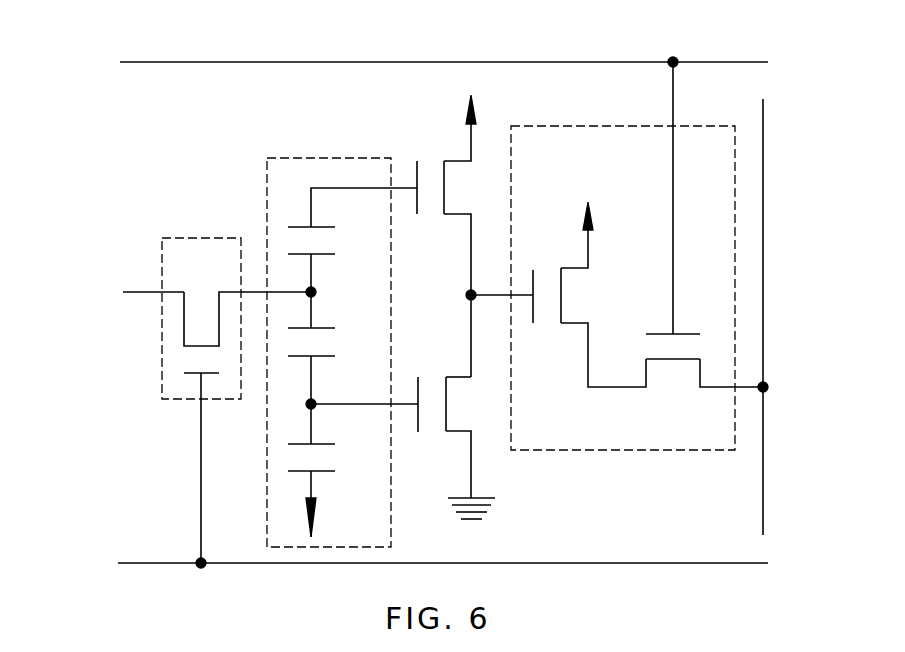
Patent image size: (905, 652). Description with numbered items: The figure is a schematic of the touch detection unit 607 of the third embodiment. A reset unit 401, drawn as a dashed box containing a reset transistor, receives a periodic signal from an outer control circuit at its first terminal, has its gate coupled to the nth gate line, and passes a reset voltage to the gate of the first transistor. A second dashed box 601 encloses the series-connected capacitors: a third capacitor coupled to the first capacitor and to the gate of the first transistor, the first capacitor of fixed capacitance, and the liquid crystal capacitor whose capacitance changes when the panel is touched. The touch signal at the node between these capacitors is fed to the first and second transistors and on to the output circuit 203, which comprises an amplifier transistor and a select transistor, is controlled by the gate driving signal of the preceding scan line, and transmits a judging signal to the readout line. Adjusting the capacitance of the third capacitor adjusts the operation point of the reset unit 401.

The touch detection unit 607 is at (184, 24).
The reset unit 401 is at (196, 238).
The capacitor unit 601 is at (327, 157).
The output circuit 203 is at (735, 193).